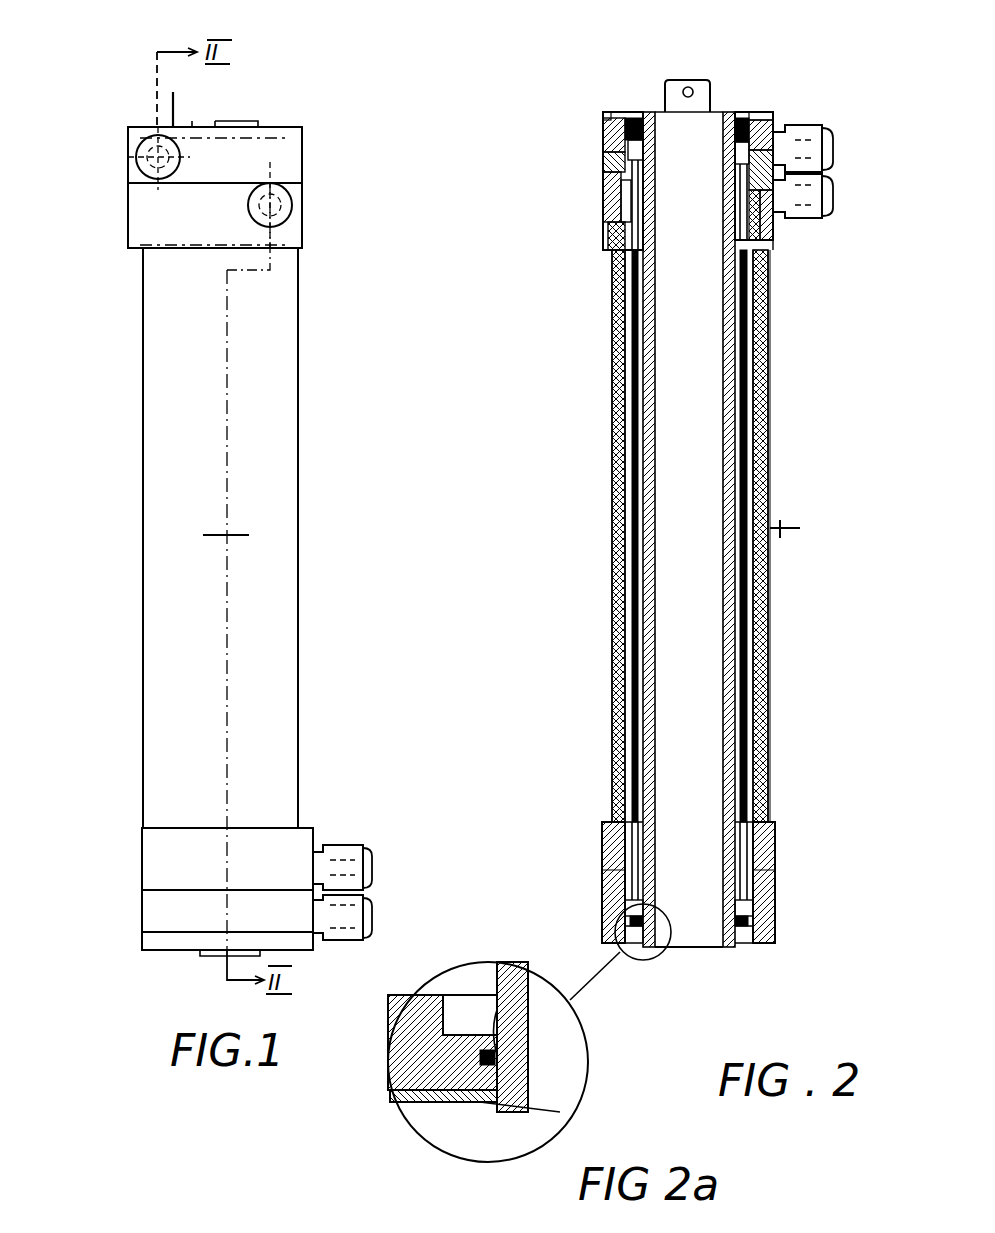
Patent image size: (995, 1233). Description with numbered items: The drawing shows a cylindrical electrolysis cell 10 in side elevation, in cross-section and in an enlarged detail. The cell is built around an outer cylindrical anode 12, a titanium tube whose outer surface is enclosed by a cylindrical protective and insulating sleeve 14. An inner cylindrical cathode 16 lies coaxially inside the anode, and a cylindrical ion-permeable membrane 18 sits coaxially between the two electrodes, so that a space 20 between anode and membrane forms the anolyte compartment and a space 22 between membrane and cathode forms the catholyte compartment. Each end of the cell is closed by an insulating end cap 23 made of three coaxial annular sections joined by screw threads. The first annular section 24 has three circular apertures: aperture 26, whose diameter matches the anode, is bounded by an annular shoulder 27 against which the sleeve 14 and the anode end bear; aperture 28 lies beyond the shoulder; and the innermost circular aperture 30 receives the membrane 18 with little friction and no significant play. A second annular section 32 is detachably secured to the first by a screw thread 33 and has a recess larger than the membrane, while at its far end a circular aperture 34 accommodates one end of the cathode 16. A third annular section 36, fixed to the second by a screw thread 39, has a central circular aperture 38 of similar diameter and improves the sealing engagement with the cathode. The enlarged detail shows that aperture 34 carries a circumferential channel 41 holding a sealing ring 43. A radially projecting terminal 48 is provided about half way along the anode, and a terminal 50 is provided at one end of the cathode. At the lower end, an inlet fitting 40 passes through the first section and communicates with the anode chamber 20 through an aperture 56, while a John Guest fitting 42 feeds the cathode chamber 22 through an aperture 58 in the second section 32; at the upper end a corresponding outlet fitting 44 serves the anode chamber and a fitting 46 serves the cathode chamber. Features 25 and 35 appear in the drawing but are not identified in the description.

In FIG. 1, the cylindrical electrolysis cell 10 is at (112, 478).
In FIG. 2, the cylindrical electrolysis cell 10 is at (588, 376).
In FIG. 2, the outer cylindrical anode 12 is at (768, 287).
In FIG. 1, the cylindrical protective and insulating sleeve 14 is at (299, 421).
In FIG. 2, the cylindrical protective and insulating sleeve 14 is at (768, 310).
In FIG. 2, the inner cylindrical cathode 16 is at (735, 262).
In FIG. 2A, the inner cylindrical cathode 16 is at (490, 965).
In FIG. 2, the cylindrical ion-permeable membrane 18 is at (768, 366).
In FIG. 2, the anolyte compartment space 20 is at (753, 553).
In FIG. 2, the catholyte compartment space 22 is at (768, 590).
In FIG. 2, the insulating end cap 23 is at (584, 152).
In FIG. 2, the first annular section 24 is at (603, 200).
In FIG. 2, the end cap shoulder 25 is at (776, 240).
In FIG. 2, the aperture 26 is at (612, 240).
In FIG. 2, the annular shoulder 27 is at (610, 215).
In FIG. 2, the aperture 28 is at (603, 140).
In FIG. 2, the innermost circular aperture 30 is at (636, 112).
In FIG. 2, the second annular section 32 is at (644, 108).
In FIG. 2A, the second annular section 32 is at (410, 1042).
In FIG. 2, the screw thread 33 is at (603, 170).
In FIG. 2, the circular aperture 34 is at (718, 112).
In FIG. 2A, the circular aperture 34 is at (528, 1012).
In FIG. 2, the cap insert 35 is at (618, 112).
In FIG. 2, the third annular section 36 is at (760, 122).
In FIG. 2A, the third annular section 36 is at (400, 1110).
In FIG. 2, the central circular aperture 38 is at (738, 112).
In FIG. 2, the screw thread 39 is at (762, 112).
In FIG. 1, the inlet fitting 40 is at (360, 860).
In FIG. 2A, the circumferential channel 41 is at (497, 1103).
In FIG. 1, the John Guest fitting 42 is at (355, 914).
In FIG. 2A, the sealing ring 43 is at (497, 1058).
In FIG. 1, the outlet fitting 44 is at (283, 207).
In FIG. 2, the outlet fitting 44 is at (805, 200).
In FIG. 1, the outlet fitting 46 is at (135, 170).
In FIG. 2, the outlet fitting 46 is at (812, 150).
In FIG. 2, the radially projecting terminal 48 is at (792, 528).
In FIG. 1, the terminal 50 is at (176, 110).
In FIG. 2, the terminal 50 is at (686, 88).
In FIG. 2, the aperture 56 is at (775, 860).
In FIG. 2, the aperture 58 is at (760, 898).